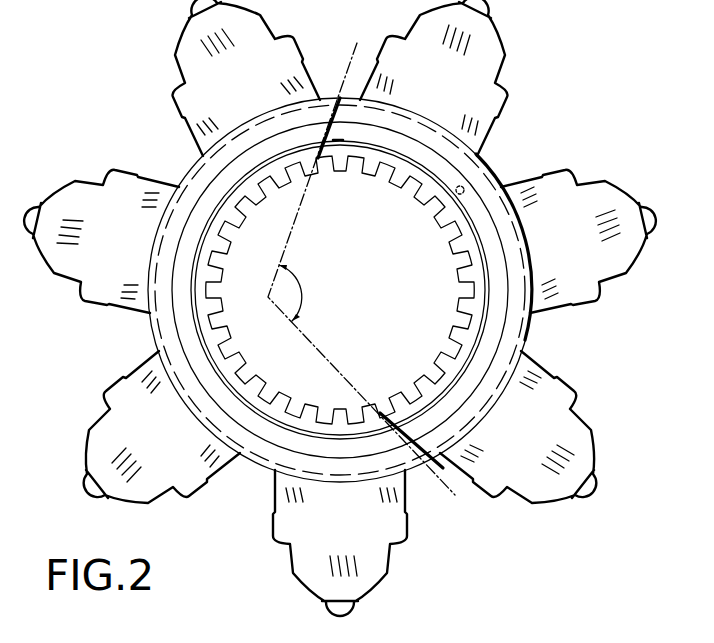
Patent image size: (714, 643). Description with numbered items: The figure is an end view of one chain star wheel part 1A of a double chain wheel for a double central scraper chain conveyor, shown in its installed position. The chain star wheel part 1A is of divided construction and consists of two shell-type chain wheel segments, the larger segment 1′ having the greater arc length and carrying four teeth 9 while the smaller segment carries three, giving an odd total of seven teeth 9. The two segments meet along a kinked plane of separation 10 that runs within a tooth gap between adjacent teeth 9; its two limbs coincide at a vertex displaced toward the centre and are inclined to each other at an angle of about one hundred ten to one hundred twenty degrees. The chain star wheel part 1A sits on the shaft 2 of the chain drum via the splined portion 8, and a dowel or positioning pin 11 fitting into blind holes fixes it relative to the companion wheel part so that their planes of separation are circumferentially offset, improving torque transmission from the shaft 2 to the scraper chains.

The chain star wheel part 1A is at (548, 97).
The chain wheel segment 1′ is at (178, 318).
The shaft 2 is at (257, 260).
The splined portion 8 is at (366, 166).
The teeth 9 is at (200, 58).
The plane of separation 10 is at (338, 133).
The positioning pin 11 is at (464, 188).